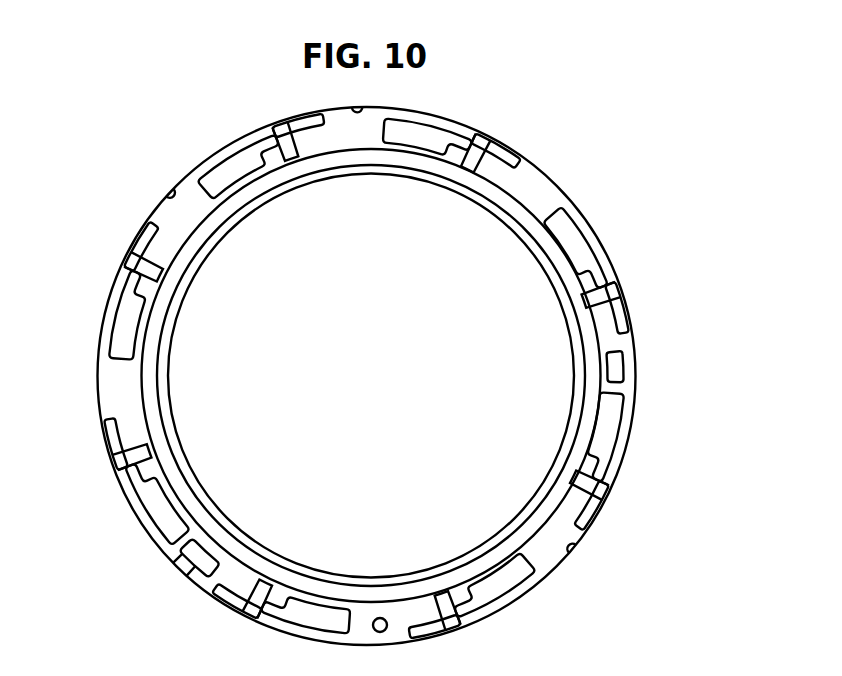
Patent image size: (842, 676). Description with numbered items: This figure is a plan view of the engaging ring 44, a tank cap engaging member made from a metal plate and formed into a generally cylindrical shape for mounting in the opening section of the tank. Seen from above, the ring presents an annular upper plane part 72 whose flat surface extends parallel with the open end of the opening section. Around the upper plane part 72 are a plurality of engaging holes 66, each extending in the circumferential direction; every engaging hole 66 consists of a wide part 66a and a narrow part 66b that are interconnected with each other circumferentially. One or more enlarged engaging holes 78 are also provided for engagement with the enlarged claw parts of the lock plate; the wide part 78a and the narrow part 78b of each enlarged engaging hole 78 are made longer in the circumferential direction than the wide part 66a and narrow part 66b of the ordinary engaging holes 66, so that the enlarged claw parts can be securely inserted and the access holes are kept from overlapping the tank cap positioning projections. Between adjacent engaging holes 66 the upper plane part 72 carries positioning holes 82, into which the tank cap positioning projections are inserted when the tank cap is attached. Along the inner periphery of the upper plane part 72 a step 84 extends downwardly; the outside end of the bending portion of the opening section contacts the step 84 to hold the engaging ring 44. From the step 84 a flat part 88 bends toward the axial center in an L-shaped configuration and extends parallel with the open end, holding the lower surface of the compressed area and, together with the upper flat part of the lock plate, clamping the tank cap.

The engaging ring 44 is at (165, 167).
The upper plane part 72 is at (532, 193).
The step 84 is at (190, 222).
The flat part 88 is at (143, 383).
The engaging hole 66 is at (393, 398).
The wide part 66a is at (613, 417).
The narrow part 66b is at (593, 506).
The enlarged engaging hole 78 is at (536, 615).
The wide part 78a is at (523, 573).
The narrow part 78b is at (470, 621).
The positioning hole 82 is at (200, 578).